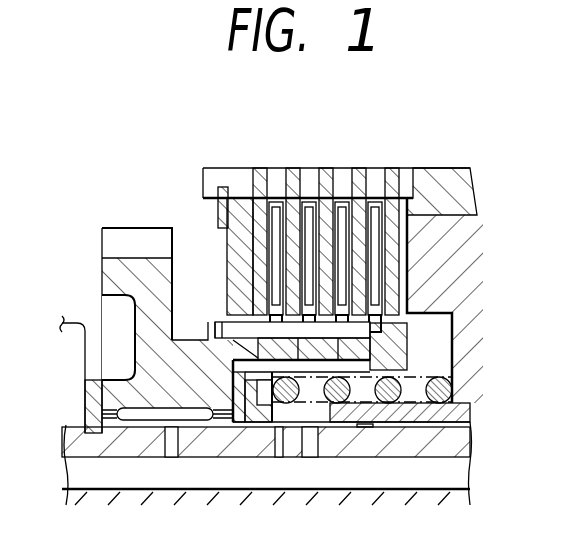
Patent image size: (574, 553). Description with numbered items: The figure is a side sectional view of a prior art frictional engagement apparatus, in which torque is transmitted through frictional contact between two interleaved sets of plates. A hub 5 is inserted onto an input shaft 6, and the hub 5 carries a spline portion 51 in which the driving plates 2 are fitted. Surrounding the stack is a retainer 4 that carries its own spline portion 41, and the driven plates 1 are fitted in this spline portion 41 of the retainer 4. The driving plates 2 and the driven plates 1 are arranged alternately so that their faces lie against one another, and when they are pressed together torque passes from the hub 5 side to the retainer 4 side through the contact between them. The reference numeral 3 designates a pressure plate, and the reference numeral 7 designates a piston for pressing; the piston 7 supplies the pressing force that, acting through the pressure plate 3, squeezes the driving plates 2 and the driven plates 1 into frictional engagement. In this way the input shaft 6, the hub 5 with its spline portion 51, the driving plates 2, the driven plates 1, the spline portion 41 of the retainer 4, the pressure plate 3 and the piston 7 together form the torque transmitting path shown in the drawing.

The driven plates 1 is at (261, 170).
The driving plates 2 is at (275, 200).
The pressure plate 3 is at (240, 190).
The retainer 4 is at (424, 168).
The spline portion 41 is at (347, 172).
The hub 5 is at (265, 313).
The spline portion 51 is at (223, 327).
The input shaft 6 is at (462, 438).
The piston 7 is at (433, 258).